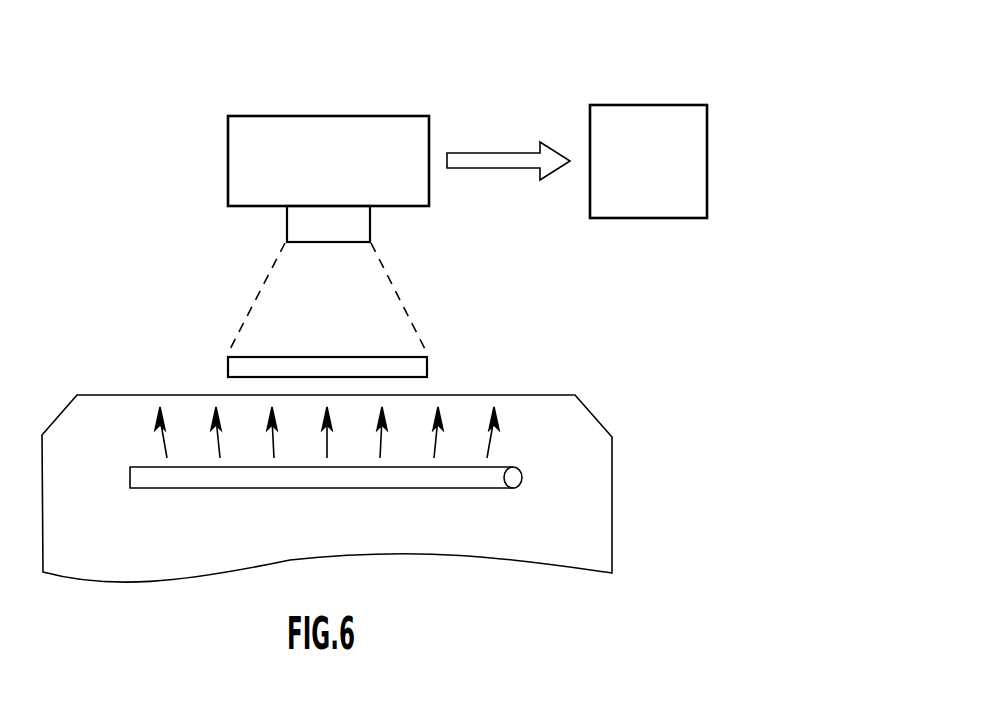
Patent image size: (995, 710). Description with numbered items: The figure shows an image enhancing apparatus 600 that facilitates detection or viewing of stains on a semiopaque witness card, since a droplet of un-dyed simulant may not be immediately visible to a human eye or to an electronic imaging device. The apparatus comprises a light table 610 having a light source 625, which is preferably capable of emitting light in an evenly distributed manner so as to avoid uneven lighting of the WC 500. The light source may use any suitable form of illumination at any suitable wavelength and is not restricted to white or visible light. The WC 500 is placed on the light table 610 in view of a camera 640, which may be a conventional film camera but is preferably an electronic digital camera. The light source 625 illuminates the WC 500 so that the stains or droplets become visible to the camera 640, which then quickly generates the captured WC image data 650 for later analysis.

The camera 640 is at (228, 160).
The WC image data 650 is at (648, 105).
The witness card (WC) 500 is at (429, 367).
The light table 610 is at (612, 488).
The light source 625 is at (452, 489).
The image enhancing apparatus 600 is at (373, 504).